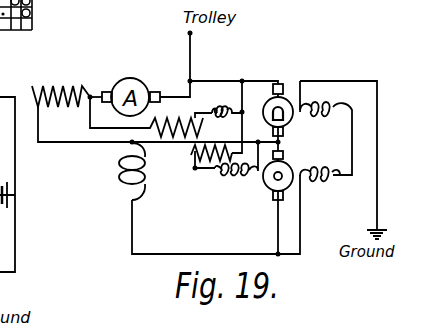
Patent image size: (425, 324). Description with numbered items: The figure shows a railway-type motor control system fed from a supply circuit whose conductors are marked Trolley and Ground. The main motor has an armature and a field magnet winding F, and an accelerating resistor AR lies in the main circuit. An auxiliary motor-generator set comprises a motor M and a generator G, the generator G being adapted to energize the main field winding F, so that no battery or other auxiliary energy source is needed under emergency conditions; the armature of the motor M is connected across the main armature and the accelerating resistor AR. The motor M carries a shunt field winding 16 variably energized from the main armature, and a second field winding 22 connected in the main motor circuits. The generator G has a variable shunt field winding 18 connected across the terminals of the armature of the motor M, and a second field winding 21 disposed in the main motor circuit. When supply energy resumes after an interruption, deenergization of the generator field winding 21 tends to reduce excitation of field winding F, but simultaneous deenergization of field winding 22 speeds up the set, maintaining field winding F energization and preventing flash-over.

The shunt field winding 16 is at (225, 109).
The variable shunt field winding 18 is at (242, 186).
The generator field winding 21 is at (320, 184).
The second field winding 22 is at (326, 129).
The motor M is at (285, 100).
The generator G is at (292, 160).
The field magnet winding F is at (120, 180).
The accelerating resistor AR is at (61, 111).